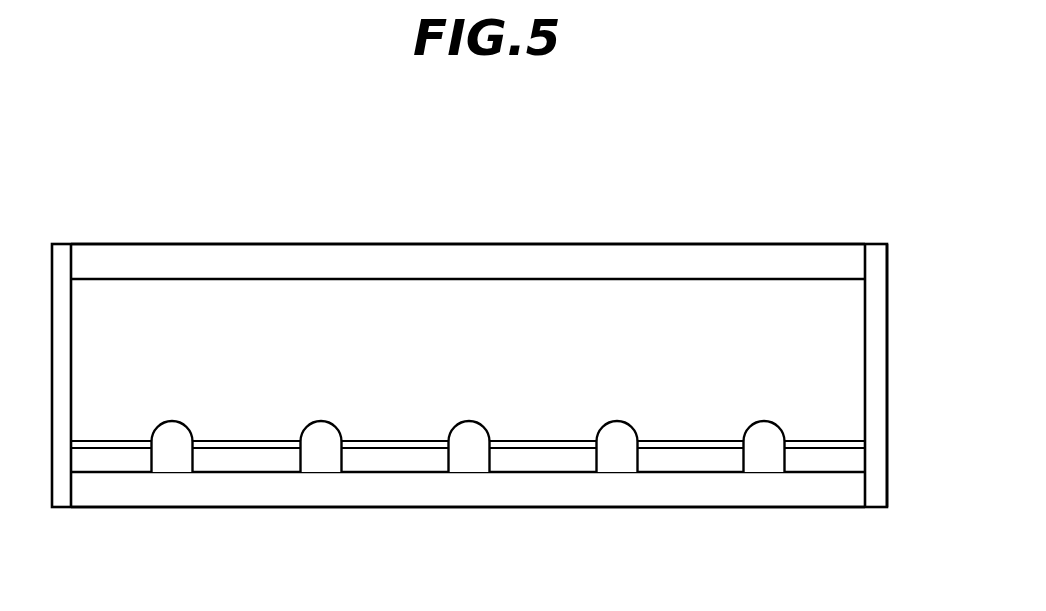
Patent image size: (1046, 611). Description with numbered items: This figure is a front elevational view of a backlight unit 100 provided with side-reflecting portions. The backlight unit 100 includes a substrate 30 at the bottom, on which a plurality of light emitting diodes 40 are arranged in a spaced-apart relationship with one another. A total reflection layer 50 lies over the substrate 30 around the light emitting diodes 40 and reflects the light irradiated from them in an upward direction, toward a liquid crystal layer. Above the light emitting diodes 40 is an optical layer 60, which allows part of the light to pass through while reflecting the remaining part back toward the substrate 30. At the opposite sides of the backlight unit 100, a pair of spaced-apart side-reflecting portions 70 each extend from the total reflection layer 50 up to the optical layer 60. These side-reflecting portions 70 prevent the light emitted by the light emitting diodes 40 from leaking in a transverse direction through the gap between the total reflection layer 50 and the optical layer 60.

The backlight unit 100 is at (333, 153).
The substrate 30 is at (605, 504).
The light emitting diodes 40 is at (764, 463).
The total reflection layer 50 is at (862, 445).
The optical layer 60 is at (812, 245).
The side-reflecting portions 70 is at (878, 350).